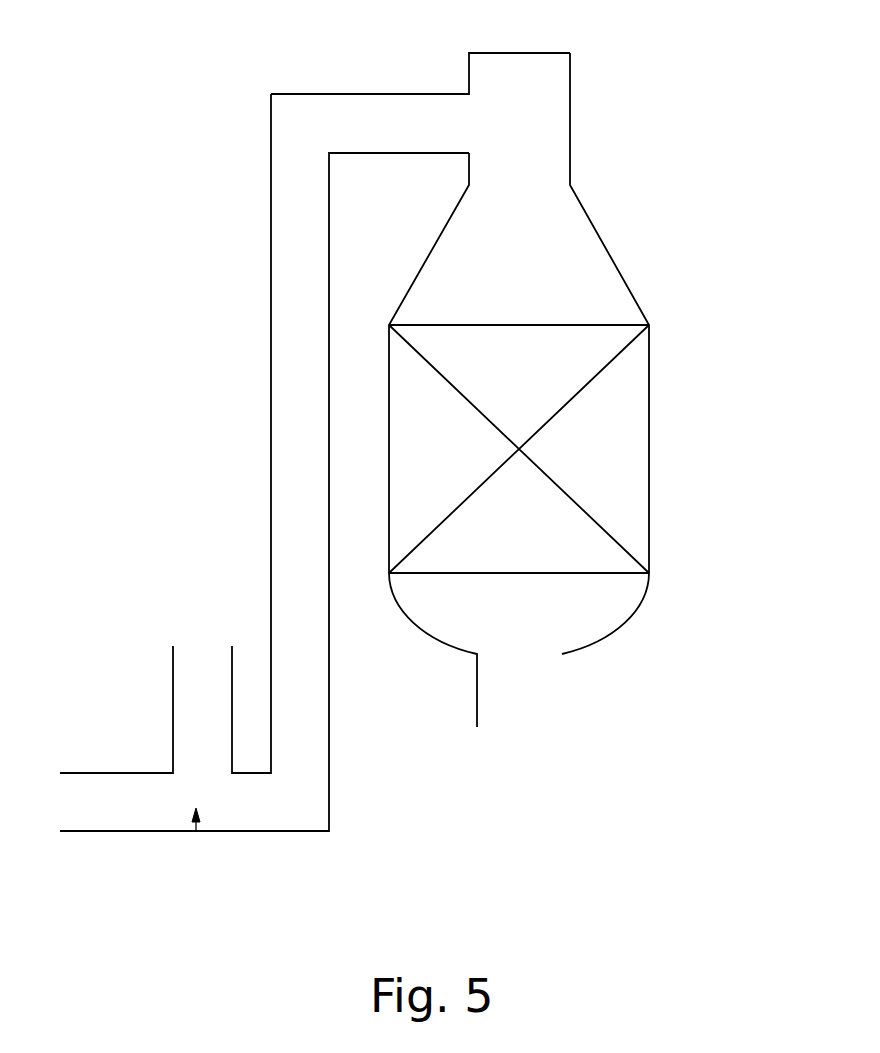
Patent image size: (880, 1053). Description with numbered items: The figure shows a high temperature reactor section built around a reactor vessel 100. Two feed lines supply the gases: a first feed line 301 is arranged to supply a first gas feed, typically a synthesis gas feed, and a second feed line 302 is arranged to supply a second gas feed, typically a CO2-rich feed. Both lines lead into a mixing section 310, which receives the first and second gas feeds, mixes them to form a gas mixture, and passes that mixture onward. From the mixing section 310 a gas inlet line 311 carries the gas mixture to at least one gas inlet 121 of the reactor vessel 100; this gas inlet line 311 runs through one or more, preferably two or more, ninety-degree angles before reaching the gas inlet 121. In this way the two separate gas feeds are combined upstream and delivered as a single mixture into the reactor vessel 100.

The reactor vessel 100 is at (667, 135).
The gas inlet 121 is at (451, 112).
The gas inlet line 311 is at (283, 442).
The first feed line 301 is at (173, 664).
The second feed line 302 is at (60, 833).
The mixing section 310 is at (196, 832).